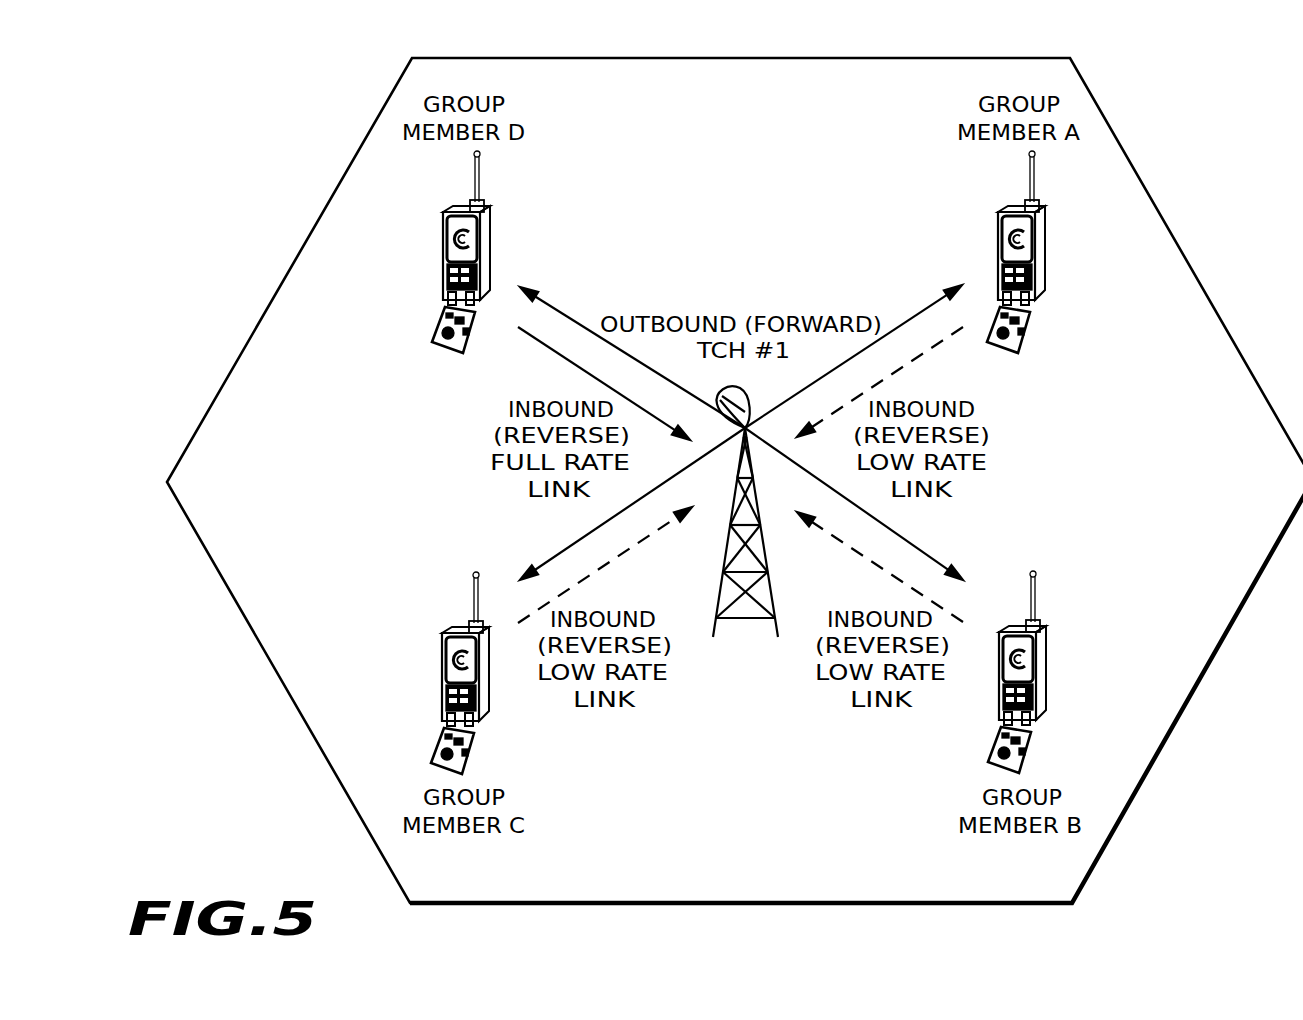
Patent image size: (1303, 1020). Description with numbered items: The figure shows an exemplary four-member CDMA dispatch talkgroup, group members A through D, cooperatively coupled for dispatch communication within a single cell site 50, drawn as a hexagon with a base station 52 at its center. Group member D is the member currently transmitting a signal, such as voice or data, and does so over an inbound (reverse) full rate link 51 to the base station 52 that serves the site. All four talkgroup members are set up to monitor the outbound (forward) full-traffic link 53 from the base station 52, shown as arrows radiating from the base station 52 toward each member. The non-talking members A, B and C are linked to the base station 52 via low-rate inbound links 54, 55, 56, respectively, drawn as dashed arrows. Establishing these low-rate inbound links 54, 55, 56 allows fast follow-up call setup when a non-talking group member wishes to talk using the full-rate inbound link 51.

The cell site 50 is at (1203, 287).
The inbound (reverse) full rate link 51 is at (550, 348).
The base station (BTS) 52 is at (748, 622).
The outbound (forward) full-traffic link 53 is at (566, 314).
The low-rate inbound link 54 is at (922, 354).
The low-rate inbound link 55 is at (852, 549).
The low-rate inbound link 56 is at (637, 545).